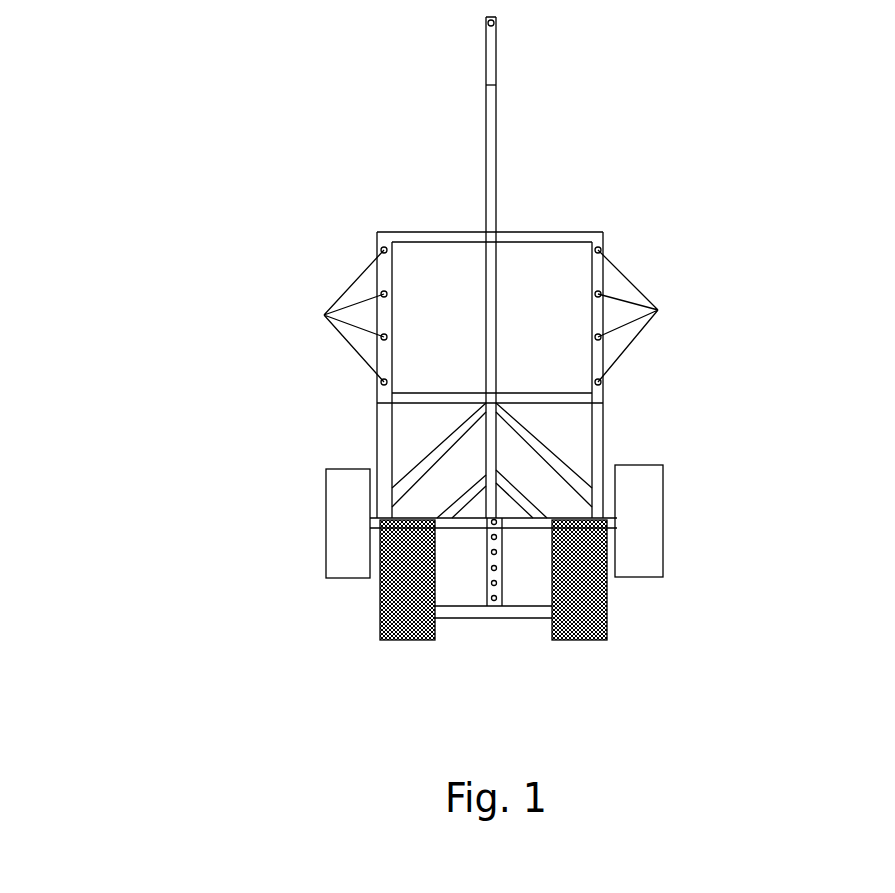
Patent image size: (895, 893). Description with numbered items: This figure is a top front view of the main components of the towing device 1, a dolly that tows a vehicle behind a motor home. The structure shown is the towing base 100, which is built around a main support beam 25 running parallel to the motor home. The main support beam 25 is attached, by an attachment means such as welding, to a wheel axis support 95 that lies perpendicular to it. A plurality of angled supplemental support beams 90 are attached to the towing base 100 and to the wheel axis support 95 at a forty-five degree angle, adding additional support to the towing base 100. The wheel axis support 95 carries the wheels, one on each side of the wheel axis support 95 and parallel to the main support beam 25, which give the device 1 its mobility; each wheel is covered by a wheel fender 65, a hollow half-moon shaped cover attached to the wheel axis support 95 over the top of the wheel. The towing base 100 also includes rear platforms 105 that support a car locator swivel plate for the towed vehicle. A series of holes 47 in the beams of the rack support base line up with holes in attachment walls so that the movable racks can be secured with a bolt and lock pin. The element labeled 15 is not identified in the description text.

The towing device 1 is at (508, 655).
The mast top section 15 is at (486, 57).
The main support beam 25 is at (496, 148).
The holes 47 is at (324, 316).
The wheel fender 65 is at (345, 520).
The angled supplemental support beams 90 is at (452, 433).
The wheel axis support 95 is at (603, 513).
The towing base 100 is at (603, 402).
The rear platforms 105 is at (380, 606).